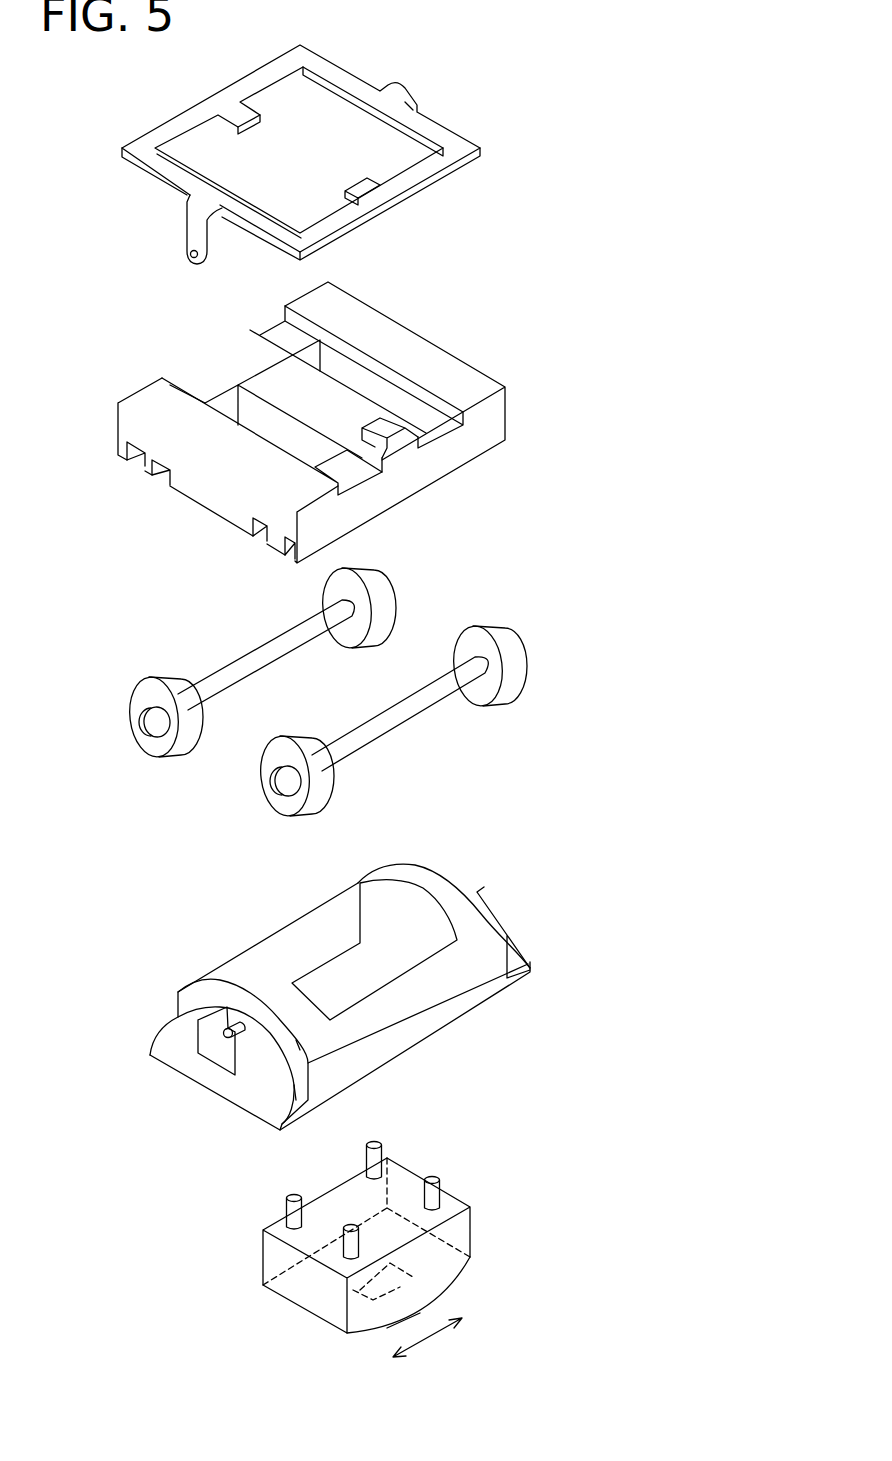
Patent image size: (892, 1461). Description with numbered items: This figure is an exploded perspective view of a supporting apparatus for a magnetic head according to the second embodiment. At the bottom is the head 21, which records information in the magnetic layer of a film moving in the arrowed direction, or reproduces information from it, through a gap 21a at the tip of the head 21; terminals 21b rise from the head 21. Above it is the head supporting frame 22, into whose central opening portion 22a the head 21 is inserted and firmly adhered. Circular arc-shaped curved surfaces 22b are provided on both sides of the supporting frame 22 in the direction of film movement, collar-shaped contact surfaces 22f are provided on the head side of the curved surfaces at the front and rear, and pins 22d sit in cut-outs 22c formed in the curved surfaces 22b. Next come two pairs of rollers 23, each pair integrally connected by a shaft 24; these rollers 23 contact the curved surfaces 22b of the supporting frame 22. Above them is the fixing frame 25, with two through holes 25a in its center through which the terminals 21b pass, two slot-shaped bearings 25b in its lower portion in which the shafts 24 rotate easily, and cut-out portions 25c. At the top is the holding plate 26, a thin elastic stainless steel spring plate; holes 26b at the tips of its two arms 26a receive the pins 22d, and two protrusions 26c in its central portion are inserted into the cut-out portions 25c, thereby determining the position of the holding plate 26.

The head 21 is at (470, 1220).
The gap 21a is at (387, 1282).
The terminals 21b is at (447, 1183).
The head supporting frame 22 is at (423, 1045).
The opening portion 22a is at (370, 982).
The circular arc-shaped curved surfaces 22b is at (498, 913).
The cut-outs 22c is at (210, 1055).
The pins 22d is at (205, 1028).
The collar-shaped contact surfaces 22f is at (193, 997).
The rollers 23 is at (267, 790).
The shafts 24 is at (273, 675).
The fixing frame 25 is at (450, 350).
The through holes 25a is at (250, 398).
The slot-shaped bearings 25b is at (273, 543).
The cut-out portions 25c is at (392, 442).
The holding plate 26 is at (467, 163).
The arms 26a is at (187, 213).
The holes 26b is at (190, 253).
The protrusions 26c is at (370, 190).